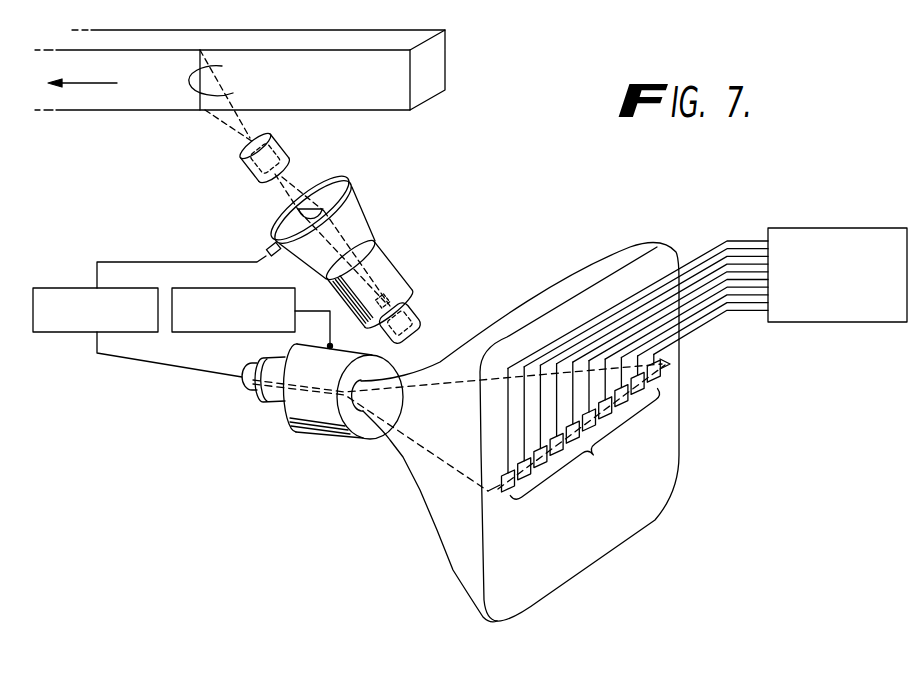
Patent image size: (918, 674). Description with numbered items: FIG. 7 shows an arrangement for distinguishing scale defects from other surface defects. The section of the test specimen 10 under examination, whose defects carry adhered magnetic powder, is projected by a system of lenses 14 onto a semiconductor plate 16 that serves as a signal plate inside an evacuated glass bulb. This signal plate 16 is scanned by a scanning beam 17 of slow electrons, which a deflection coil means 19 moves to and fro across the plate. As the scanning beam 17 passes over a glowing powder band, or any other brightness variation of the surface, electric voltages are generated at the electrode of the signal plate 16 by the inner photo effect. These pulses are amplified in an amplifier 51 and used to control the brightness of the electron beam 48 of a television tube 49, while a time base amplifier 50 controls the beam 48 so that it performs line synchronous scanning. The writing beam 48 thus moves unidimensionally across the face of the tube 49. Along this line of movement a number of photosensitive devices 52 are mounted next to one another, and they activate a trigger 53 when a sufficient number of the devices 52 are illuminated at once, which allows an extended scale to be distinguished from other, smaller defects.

The test specimen 10 is at (440, 73).
The system of lenses 14 is at (250, 169).
The semiconductor plate 16 is at (340, 186).
The scanning beam 17 is at (340, 233).
The deflection coil means 19 is at (403, 274).
The electron beam 48 is at (413, 442).
The television tube 49 is at (430, 488).
The time base amplifier 50 is at (243, 333).
The amplifier 51 is at (73, 288).
The photosensitive devices 52 is at (584, 431).
The trigger 53 is at (851, 192).